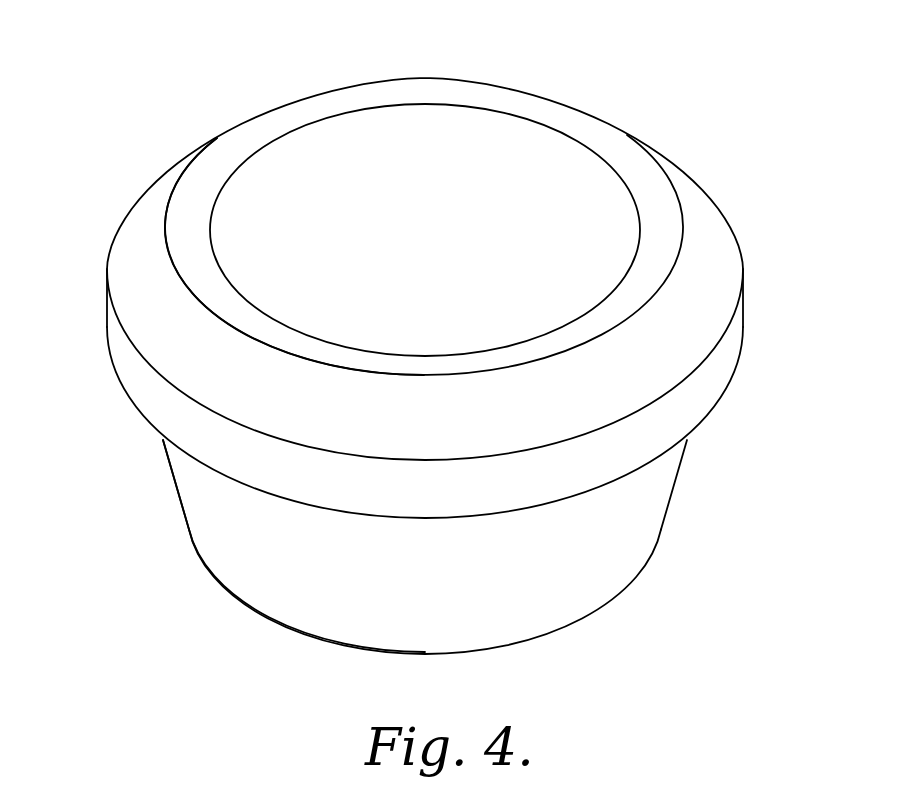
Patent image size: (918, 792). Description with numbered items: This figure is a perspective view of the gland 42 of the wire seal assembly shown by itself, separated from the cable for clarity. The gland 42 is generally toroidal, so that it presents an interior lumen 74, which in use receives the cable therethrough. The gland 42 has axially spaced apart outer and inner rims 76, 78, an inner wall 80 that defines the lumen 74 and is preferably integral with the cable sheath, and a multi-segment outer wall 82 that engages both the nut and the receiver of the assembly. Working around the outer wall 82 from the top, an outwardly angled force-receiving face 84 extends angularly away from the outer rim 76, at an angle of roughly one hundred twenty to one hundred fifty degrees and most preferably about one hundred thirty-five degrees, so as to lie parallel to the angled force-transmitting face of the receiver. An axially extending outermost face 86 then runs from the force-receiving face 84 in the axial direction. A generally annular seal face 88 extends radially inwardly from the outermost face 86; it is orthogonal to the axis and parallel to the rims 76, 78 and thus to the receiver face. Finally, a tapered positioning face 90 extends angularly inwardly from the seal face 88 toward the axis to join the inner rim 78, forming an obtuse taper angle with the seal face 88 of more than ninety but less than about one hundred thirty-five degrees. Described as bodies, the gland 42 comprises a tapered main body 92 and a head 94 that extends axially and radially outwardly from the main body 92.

The gland 42 is at (690, 115).
The lumen 74 is at (424, 160).
The outer rim 76 is at (553, 115).
The inner rim 78 is at (587, 617).
The inner wall 80 is at (313, 166).
The outer wall 82 is at (645, 511).
The force-receiving face 84 is at (705, 227).
The outermost face 86 is at (732, 345).
The seal face 88 is at (133, 410).
The tapered positioning face 90 is at (220, 522).
The main body 92 is at (313, 578).
The head 94 is at (157, 193).